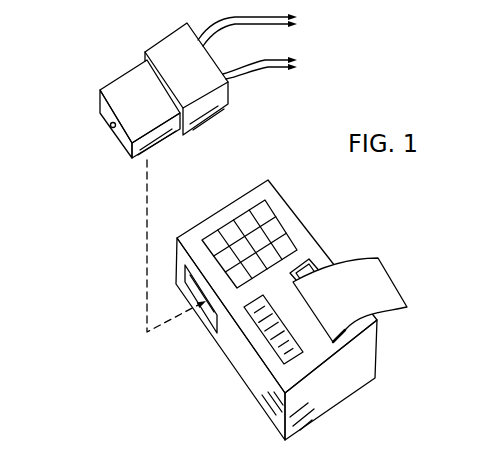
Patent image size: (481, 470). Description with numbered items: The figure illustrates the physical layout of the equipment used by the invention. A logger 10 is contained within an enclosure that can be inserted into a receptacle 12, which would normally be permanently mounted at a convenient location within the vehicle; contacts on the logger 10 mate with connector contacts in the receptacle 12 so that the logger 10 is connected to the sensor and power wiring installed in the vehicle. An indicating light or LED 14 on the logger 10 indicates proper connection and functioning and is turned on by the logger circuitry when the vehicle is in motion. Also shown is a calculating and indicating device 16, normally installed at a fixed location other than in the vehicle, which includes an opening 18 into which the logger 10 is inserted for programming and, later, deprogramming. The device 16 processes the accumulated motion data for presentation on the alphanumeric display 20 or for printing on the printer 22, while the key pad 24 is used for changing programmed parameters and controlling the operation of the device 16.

The logger 10 is at (127, 98).
The receptacle 12 is at (213, 113).
The LED 14 is at (110, 128).
The calculating and indicating device 16 is at (308, 254).
The opening 18 is at (195, 312).
The alphanumeric display 20 is at (266, 366).
The printer 22 is at (328, 307).
The key pad 24 is at (230, 238).